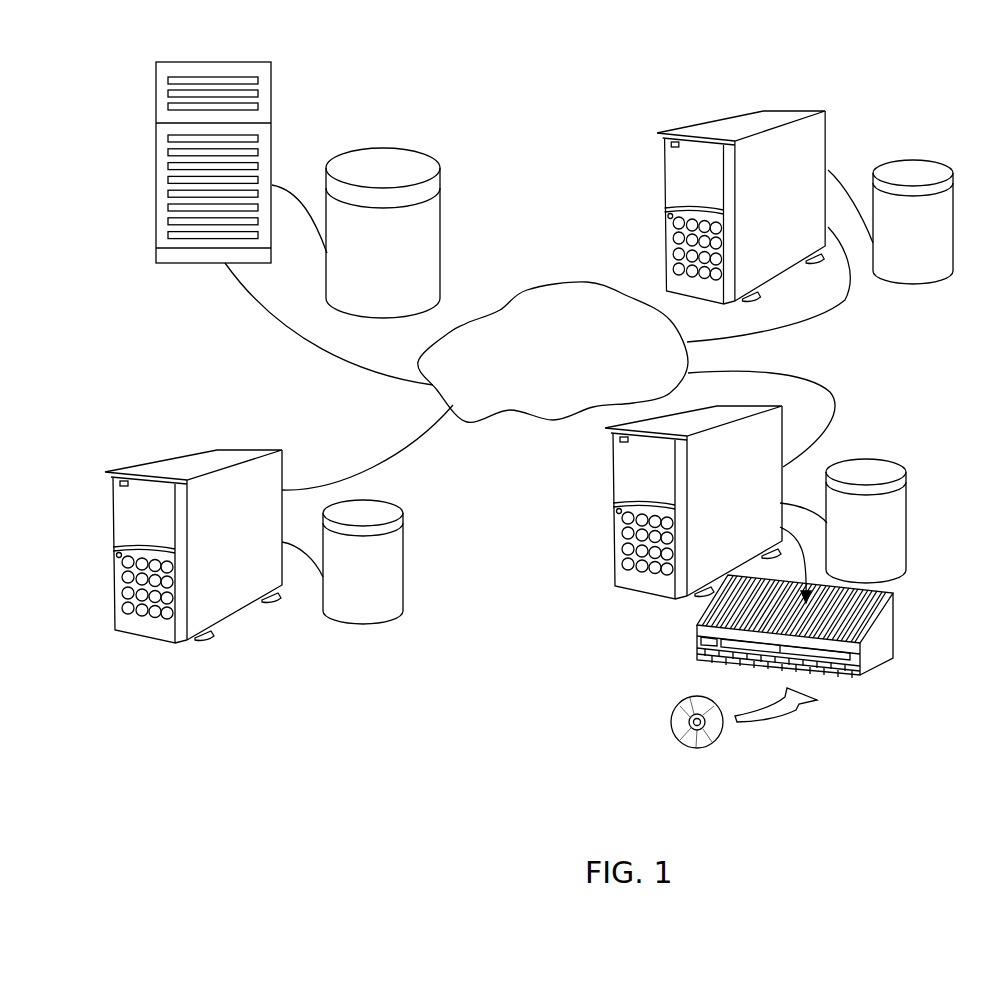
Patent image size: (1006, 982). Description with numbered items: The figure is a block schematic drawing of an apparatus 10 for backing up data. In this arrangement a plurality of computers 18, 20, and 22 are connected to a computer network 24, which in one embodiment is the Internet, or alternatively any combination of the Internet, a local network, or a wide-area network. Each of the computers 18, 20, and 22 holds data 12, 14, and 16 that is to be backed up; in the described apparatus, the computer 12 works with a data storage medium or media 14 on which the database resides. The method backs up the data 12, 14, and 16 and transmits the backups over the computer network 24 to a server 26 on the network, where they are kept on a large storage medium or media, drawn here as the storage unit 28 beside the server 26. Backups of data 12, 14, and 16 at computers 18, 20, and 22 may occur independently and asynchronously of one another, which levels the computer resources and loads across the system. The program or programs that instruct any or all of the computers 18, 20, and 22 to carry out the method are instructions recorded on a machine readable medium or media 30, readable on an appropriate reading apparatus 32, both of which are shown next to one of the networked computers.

The apparatus for backing up data 10 is at (237, 731).
The computer / data 12 is at (888, 468).
The data storage medium or media 14 is at (930, 167).
The data 16 is at (388, 510).
The computer 18 is at (615, 552).
The computer 20 is at (773, 113).
The computer 22 is at (115, 593).
The computer network 24 is at (532, 290).
The server 26 is at (232, 61).
The server data storage device 28 is at (409, 150).
The machine readable medium or media 30 is at (685, 707).
The reading apparatus 32 is at (883, 618).